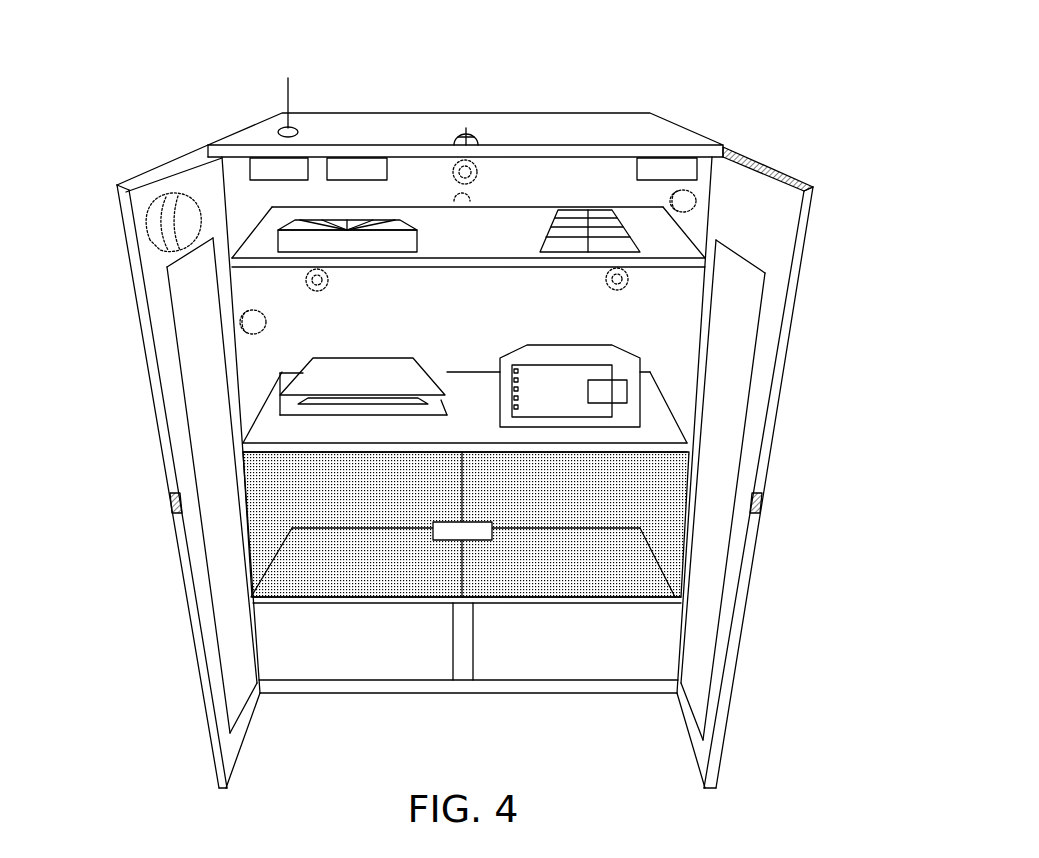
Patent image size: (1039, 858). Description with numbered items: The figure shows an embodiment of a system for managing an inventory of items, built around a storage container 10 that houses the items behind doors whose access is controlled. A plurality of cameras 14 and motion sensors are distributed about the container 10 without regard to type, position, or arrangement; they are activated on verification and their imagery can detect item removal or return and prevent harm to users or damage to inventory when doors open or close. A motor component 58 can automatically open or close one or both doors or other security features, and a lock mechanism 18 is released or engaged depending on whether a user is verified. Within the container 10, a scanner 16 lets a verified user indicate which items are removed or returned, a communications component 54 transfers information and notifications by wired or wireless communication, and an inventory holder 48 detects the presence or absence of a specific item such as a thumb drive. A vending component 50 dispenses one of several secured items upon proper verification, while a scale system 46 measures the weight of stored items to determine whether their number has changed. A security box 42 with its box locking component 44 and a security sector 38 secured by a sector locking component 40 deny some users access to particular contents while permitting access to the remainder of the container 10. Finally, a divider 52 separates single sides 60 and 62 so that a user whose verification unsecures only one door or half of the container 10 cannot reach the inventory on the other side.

The storage container 10 is at (683, 127).
The camera 14 is at (188, 215).
The scanner 16 is at (375, 160).
The lock mechanism 18 is at (757, 500).
The security sector component 38 is at (670, 585).
The sector locking component 40 is at (445, 535).
The security box 42 is at (630, 360).
The box locking component 44 is at (620, 392).
The scale system 46 is at (313, 380).
The inventory holder 48 is at (295, 240).
The vending component 50 is at (600, 247).
The divider 52 is at (463, 667).
The communications component 54 is at (270, 160).
The motor component 58 is at (725, 153).
The single side 60 is at (657, 657).
The single side 62 is at (283, 652).